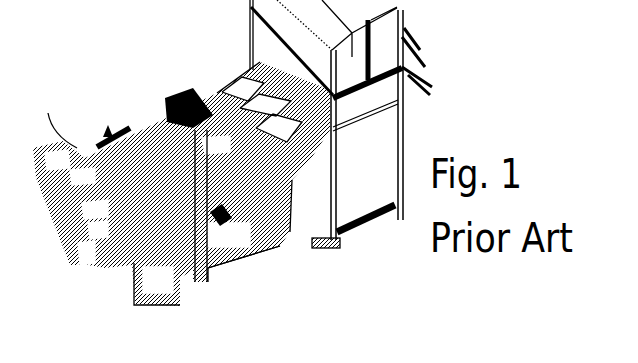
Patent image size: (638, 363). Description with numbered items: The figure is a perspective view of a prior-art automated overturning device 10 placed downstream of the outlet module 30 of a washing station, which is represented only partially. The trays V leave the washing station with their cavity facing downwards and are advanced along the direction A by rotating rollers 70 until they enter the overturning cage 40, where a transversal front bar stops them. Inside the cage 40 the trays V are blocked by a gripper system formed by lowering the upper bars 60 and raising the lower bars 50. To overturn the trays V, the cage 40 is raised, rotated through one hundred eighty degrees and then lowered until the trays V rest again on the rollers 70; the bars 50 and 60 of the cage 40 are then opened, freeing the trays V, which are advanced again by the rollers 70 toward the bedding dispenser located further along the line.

The overturning device 10 is at (168, 90).
The outlet module of a washing station 30 is at (77, 260).
The overturning cage 40 is at (267, 233).
The lower bars 50 is at (165, 92).
The upper bars 60 is at (278, 188).
The rotating rollers 70 is at (143, 133).
The trays V is at (62, 120).
The direction A is at (108, 131).